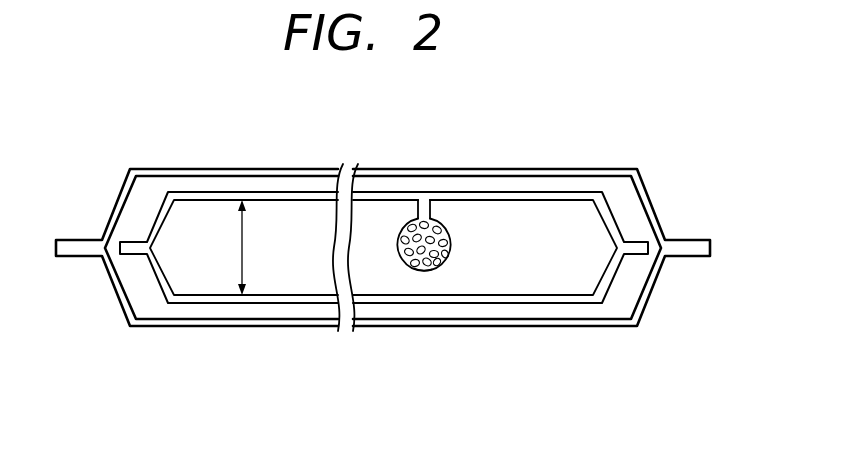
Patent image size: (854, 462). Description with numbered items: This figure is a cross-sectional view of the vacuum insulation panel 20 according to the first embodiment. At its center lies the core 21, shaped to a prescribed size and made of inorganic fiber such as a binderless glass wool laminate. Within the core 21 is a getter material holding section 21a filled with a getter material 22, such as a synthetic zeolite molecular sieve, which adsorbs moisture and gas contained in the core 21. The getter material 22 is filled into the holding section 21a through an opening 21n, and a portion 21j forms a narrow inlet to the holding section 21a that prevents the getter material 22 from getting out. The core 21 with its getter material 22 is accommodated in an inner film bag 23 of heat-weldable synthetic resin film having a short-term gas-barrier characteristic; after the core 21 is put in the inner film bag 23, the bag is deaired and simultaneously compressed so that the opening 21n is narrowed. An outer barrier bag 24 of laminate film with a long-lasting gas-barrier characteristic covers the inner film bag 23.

The sensor assembly 20 is at (240, 162).
The core 21 is at (293, 280).
The getter material holding section 21a is at (418, 271).
The portion forming a narrow inlet 21j is at (412, 210).
The opening 21n is at (424, 205).
The getter material 22 is at (450, 253).
The inner film bag 23 is at (614, 208).
The outer barrier bag 24 is at (660, 217).